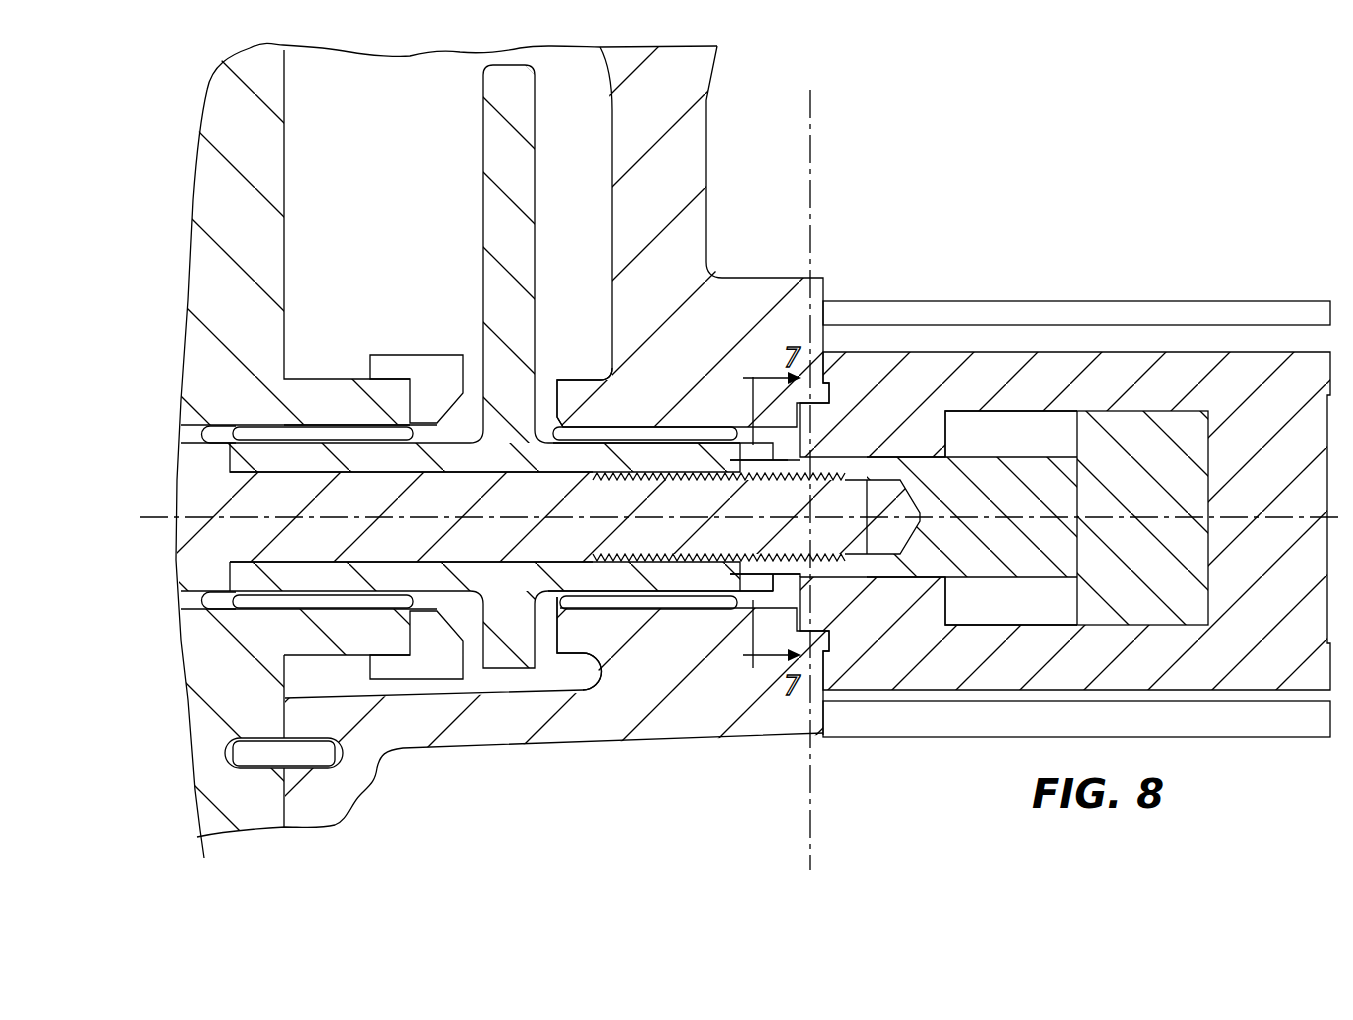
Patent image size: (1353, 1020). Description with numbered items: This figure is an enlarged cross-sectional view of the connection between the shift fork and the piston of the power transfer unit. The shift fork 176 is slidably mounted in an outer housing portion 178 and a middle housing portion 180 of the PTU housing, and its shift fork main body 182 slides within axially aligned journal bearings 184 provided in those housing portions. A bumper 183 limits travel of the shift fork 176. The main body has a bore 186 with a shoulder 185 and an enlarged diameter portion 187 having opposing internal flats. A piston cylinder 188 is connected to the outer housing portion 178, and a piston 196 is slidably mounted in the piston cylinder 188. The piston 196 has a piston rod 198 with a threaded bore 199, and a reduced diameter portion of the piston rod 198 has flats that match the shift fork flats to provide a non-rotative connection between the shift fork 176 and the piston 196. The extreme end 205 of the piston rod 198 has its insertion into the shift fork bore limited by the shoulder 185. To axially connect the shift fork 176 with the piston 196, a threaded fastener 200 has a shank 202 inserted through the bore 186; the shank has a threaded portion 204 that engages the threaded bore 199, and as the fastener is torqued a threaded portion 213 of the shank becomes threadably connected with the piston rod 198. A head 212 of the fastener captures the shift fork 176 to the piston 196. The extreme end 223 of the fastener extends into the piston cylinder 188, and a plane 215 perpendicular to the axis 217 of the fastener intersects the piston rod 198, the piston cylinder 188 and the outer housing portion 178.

The shift fork 176 is at (481, 337).
The outer housing portion 178 is at (708, 165).
The middle housing portion 180 is at (285, 226).
The shift fork main body 182 is at (353, 427).
The bumper 183 is at (405, 352).
The journal bearings 184 is at (290, 426).
The shoulder 185 is at (740, 460).
The bore 186 is at (567, 482).
The enlarged diameter portion 187 is at (743, 565).
The piston cylinder 188 is at (918, 300).
The piston 196 is at (1112, 411).
The piston rod 198 is at (985, 455).
The threaded bore 199 is at (815, 486).
The threaded fastener 200 is at (273, 470).
The shank 202 is at (493, 545).
The threaded portion 204 is at (647, 563).
The extreme end of piston rod 205 is at (727, 567).
The head 212 is at (205, 410).
The threaded portion of the shank 213 is at (600, 563).
The plane 215 is at (812, 118).
The axis 217 is at (943, 517).
The extreme end of fastener 223 is at (867, 503).